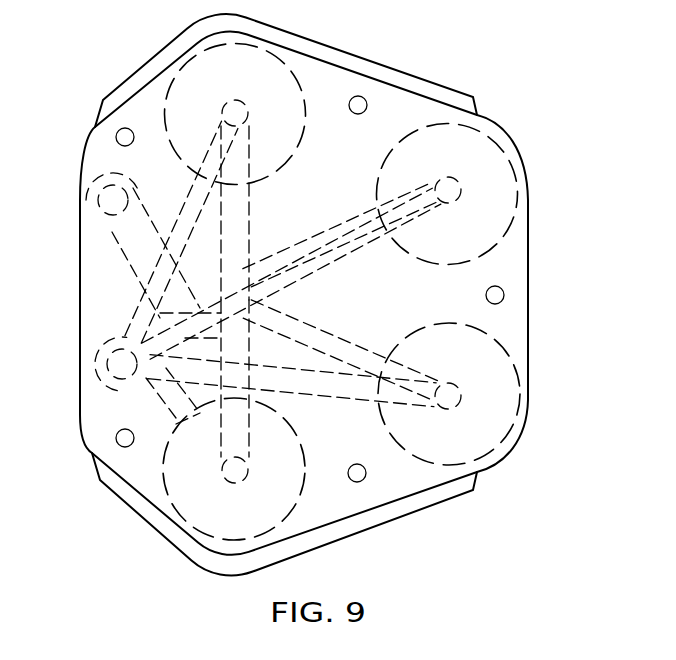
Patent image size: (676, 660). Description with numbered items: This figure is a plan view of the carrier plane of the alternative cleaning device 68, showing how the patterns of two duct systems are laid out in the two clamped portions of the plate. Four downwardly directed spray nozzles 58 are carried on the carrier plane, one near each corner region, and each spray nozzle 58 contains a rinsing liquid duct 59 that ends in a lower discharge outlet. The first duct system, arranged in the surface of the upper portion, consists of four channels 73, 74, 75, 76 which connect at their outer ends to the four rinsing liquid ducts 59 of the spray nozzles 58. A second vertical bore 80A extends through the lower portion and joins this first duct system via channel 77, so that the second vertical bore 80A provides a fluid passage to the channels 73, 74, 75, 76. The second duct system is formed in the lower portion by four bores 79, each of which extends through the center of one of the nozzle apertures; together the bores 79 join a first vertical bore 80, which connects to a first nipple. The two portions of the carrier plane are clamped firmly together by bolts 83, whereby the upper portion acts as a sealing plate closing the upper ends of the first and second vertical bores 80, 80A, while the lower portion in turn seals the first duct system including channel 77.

The spray nozzle 58 is at (187, 68).
The rinsing liquid duct 59 is at (262, 86).
The cleaning device 68 is at (529, 254).
The channel 73 is at (252, 205).
The channel 74 is at (322, 226).
The channel 75 is at (336, 322).
The channel 76 is at (219, 438).
The channel 77 is at (118, 282).
The bore 79 is at (354, 270).
The first vertical bore 80 is at (98, 366).
The second vertical bore 80A is at (88, 205).
The bolt 83 is at (116, 137).